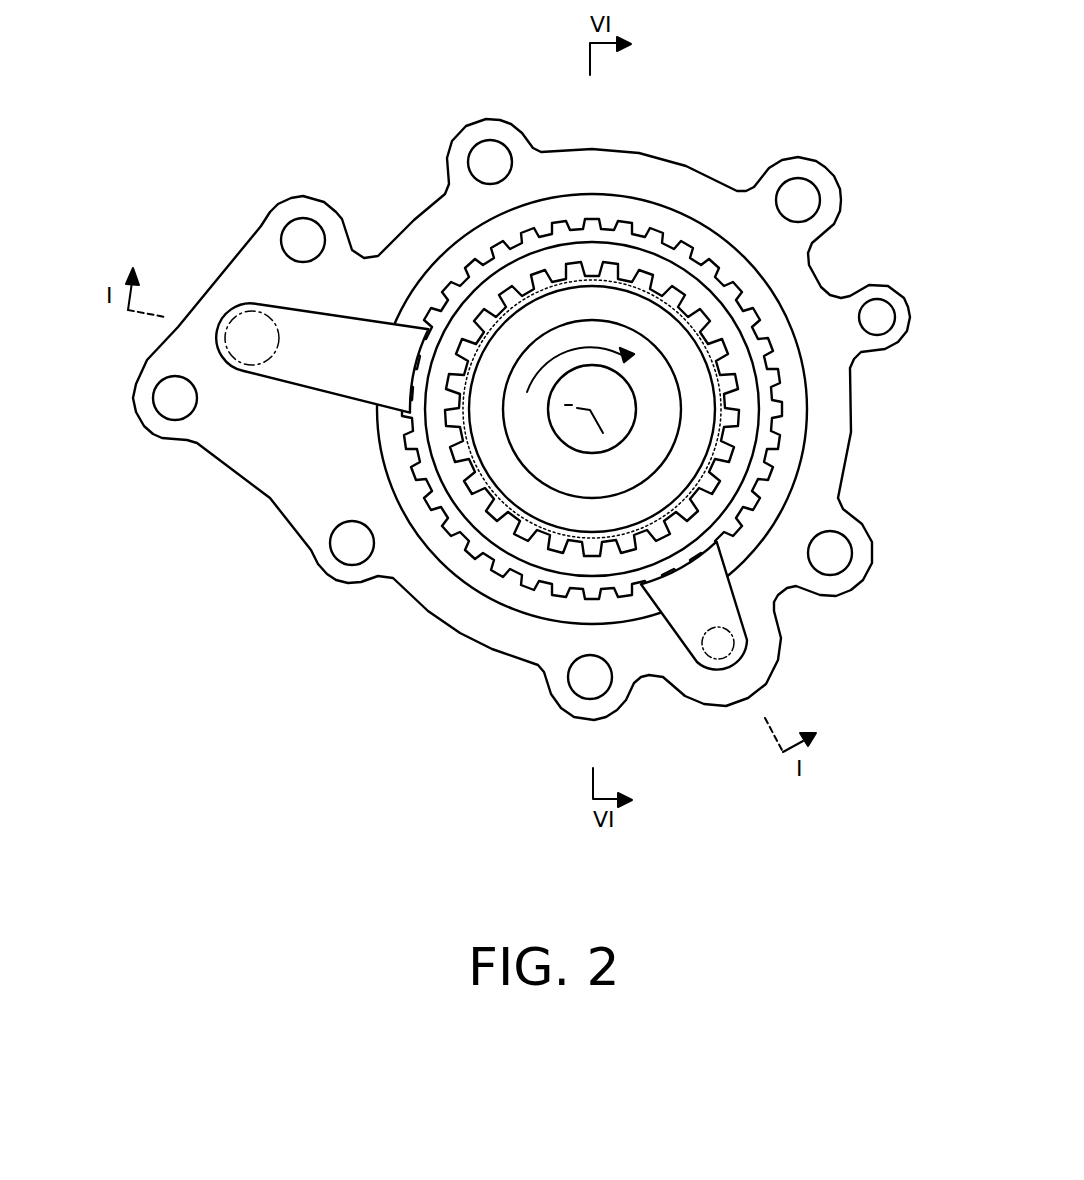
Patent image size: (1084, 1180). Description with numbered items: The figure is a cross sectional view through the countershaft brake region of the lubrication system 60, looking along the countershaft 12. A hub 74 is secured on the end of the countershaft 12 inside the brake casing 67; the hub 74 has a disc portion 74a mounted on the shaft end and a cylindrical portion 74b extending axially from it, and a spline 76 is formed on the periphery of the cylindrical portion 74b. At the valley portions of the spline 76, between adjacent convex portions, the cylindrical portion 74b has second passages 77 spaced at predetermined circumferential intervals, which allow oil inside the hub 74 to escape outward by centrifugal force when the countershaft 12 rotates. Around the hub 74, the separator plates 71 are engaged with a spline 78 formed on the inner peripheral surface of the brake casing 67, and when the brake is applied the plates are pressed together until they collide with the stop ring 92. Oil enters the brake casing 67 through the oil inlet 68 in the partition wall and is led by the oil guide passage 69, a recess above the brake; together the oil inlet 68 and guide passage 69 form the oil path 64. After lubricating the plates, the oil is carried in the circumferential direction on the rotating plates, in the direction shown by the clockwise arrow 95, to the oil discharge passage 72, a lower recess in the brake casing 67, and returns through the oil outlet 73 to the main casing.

The lubrication system 60 is at (532, 397).
The brake casing 67 is at (848, 420).
The spline 78 is at (573, 451).
The stop ring 92 is at (525, 575).
The oil path 64 is at (312, 316).
The oil guide passage 69 is at (346, 372).
The oil inlet 68 is at (242, 315).
The oil discharge passage 72 is at (738, 606).
The oil outlet 73 is at (735, 638).
The separator plates 71 is at (648, 474).
The spline 76 is at (648, 397).
The second passages 77 is at (688, 317).
The cylindrical portion 74b is at (695, 493).
The hub 74 is at (689, 409).
The disc portion 74a is at (614, 531).
The countershaft 12 is at (610, 403).
The clockwise arrow 95 is at (562, 356).